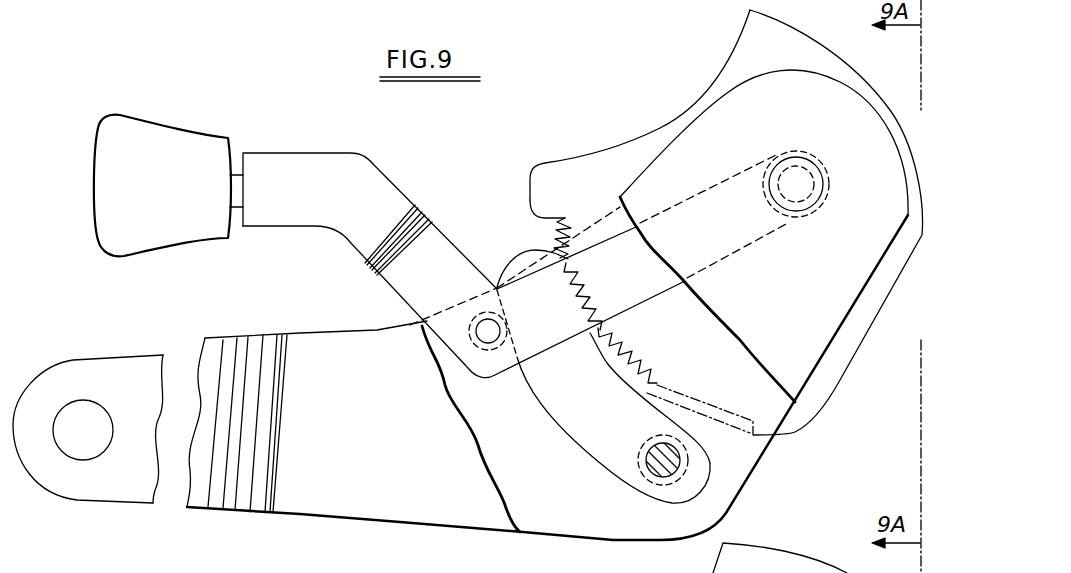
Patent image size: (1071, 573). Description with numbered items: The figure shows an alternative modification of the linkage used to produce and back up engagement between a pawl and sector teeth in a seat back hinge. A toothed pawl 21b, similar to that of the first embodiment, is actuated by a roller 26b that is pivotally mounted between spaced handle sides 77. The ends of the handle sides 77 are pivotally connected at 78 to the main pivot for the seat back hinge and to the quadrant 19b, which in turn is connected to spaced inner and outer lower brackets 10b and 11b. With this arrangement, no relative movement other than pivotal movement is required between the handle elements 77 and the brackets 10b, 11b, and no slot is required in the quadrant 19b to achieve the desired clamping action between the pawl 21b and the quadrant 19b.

The handle sides 77 is at (460, 262).
The main pivot connection 78 is at (806, 172).
The roller 26b is at (487, 352).
The toothed pawl 21b is at (588, 433).
The outer lower bracket 11b is at (573, 525).
The inner lower bracket 10b is at (400, 512).
The quadrant 19b is at (820, 397).